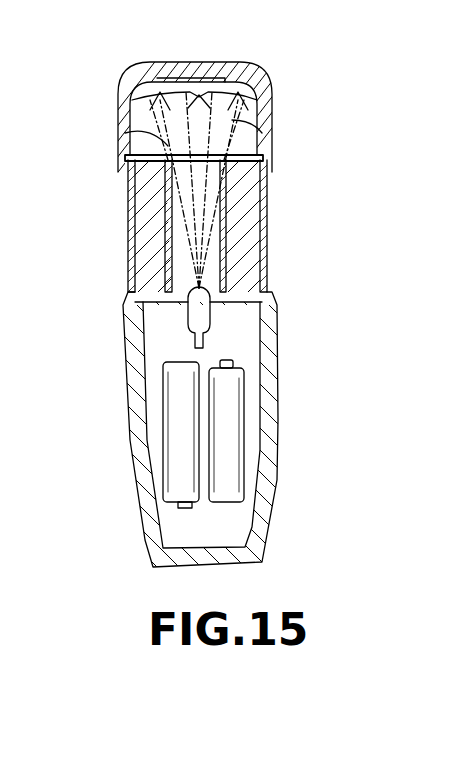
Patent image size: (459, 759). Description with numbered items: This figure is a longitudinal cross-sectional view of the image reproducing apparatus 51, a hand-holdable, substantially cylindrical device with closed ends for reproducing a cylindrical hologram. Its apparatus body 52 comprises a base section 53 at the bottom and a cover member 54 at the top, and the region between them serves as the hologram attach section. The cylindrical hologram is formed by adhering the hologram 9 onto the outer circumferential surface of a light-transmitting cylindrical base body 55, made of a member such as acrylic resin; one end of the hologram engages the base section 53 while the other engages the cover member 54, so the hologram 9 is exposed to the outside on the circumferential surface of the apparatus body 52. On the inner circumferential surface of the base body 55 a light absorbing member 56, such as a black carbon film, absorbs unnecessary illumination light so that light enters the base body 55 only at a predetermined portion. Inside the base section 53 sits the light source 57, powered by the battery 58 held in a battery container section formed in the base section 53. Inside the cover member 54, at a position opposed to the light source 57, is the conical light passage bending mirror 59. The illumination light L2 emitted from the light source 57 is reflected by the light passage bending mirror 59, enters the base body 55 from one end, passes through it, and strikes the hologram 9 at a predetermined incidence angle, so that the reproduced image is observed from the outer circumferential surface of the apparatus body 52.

The image reproducing apparatus 51 is at (310, 75).
The apparatus body 52 is at (122, 275).
The base section 53 is at (275, 330).
The cover member 54 is at (268, 98).
The base body 55 is at (243, 275).
The light absorbing member 56 is at (262, 247).
The light source 57 is at (205, 318).
The battery 58 is at (233, 452).
The light passage bending mirror 59 is at (200, 75).
The hologram 9 is at (266, 222).
The illumination light L2 is at (148, 110).